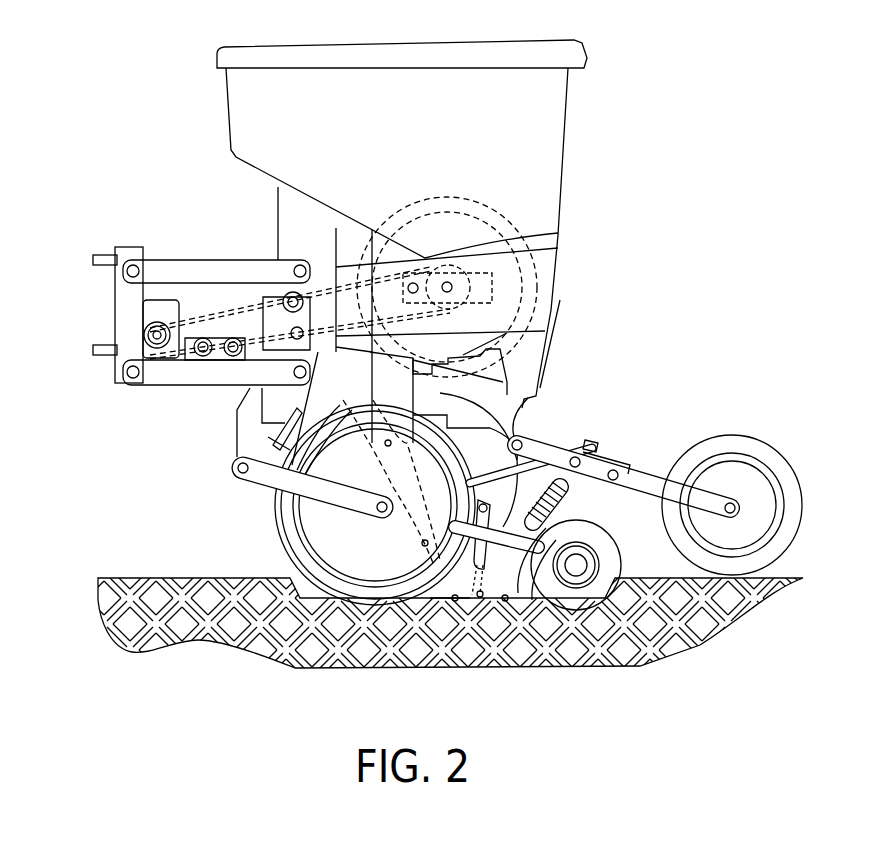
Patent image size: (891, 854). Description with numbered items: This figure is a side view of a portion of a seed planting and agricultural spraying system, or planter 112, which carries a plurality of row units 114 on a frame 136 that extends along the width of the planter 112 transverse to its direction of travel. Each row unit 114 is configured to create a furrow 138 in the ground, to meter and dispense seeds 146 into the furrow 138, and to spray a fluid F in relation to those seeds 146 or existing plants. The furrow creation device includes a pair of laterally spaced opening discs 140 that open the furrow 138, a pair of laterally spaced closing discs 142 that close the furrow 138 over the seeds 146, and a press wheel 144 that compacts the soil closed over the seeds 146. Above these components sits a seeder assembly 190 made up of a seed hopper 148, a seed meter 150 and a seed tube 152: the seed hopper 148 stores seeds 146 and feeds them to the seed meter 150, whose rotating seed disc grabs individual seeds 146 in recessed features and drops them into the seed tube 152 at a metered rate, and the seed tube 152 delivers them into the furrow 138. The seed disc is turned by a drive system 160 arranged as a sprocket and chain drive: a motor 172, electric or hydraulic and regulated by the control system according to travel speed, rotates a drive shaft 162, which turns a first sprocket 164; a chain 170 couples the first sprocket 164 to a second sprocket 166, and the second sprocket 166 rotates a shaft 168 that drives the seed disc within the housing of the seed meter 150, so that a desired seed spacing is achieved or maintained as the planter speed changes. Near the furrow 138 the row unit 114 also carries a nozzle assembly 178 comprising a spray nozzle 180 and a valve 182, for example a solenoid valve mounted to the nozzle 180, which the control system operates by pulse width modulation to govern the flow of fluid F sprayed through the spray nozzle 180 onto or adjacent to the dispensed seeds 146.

The planter 112 is at (821, 112).
The row unit 114 is at (766, 158).
The frame 136 is at (165, 258).
The furrow 138 is at (433, 592).
The opening discs 140 is at (275, 548).
The closing discs 142 is at (590, 530).
The press wheel 144 is at (755, 440).
The seeds 146 is at (348, 432).
The seed hopper 148 is at (567, 128).
The seed meter 150 is at (511, 223).
The seed tube 152 is at (413, 388).
The drive system 160 is at (236, 295).
The drive shaft 162 is at (145, 330).
The first sprocket 164 is at (178, 345).
The second sprocket 166 is at (492, 298).
The shaft 168 is at (492, 275).
The chain 170 is at (198, 300).
The motor 172 is at (142, 298).
The nozzle assembly 178 is at (560, 442).
The spray nozzle 180 is at (443, 526).
The valve 182 is at (520, 420).
The seeder assembly 190 is at (205, 160).
The fluid F is at (462, 596).